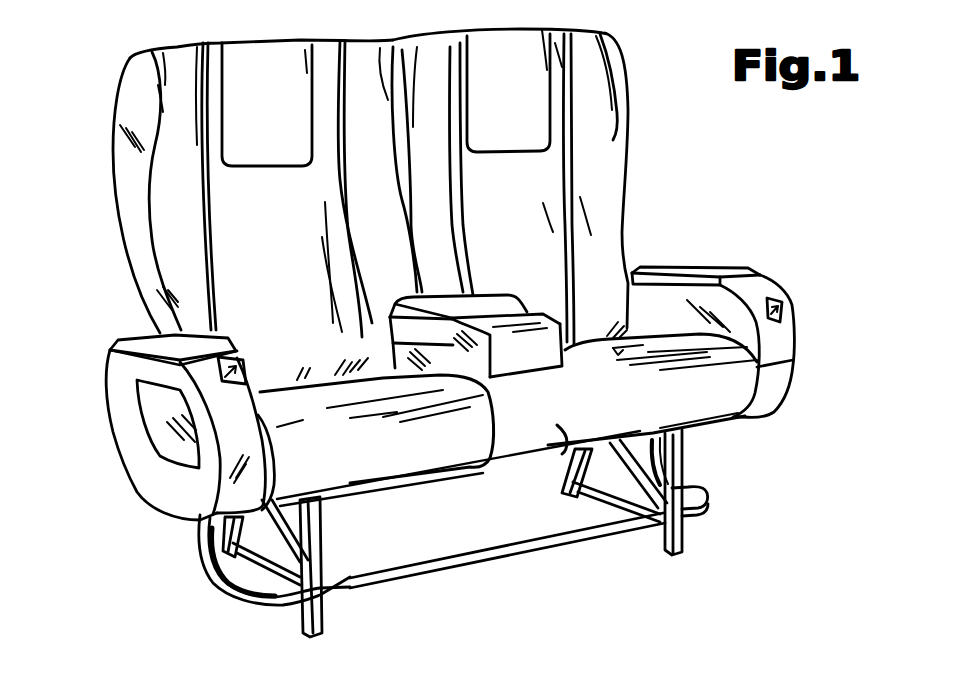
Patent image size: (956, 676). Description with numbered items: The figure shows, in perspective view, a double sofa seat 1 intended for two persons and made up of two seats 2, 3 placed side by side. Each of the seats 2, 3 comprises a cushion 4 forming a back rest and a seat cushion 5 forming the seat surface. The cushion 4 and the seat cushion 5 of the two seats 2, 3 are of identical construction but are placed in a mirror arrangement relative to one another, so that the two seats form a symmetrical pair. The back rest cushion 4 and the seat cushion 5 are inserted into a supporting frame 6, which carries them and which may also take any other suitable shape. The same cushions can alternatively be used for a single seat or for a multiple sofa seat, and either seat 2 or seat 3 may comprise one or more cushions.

The double sofa seat 1 is at (103, 113).
The seat 2 is at (253, 251).
The seat 3 is at (527, 225).
The cushion for a back rest 4 is at (262, 193).
The cushion for a seat surface 5 is at (760, 367).
The supporting frame 6 is at (317, 593).